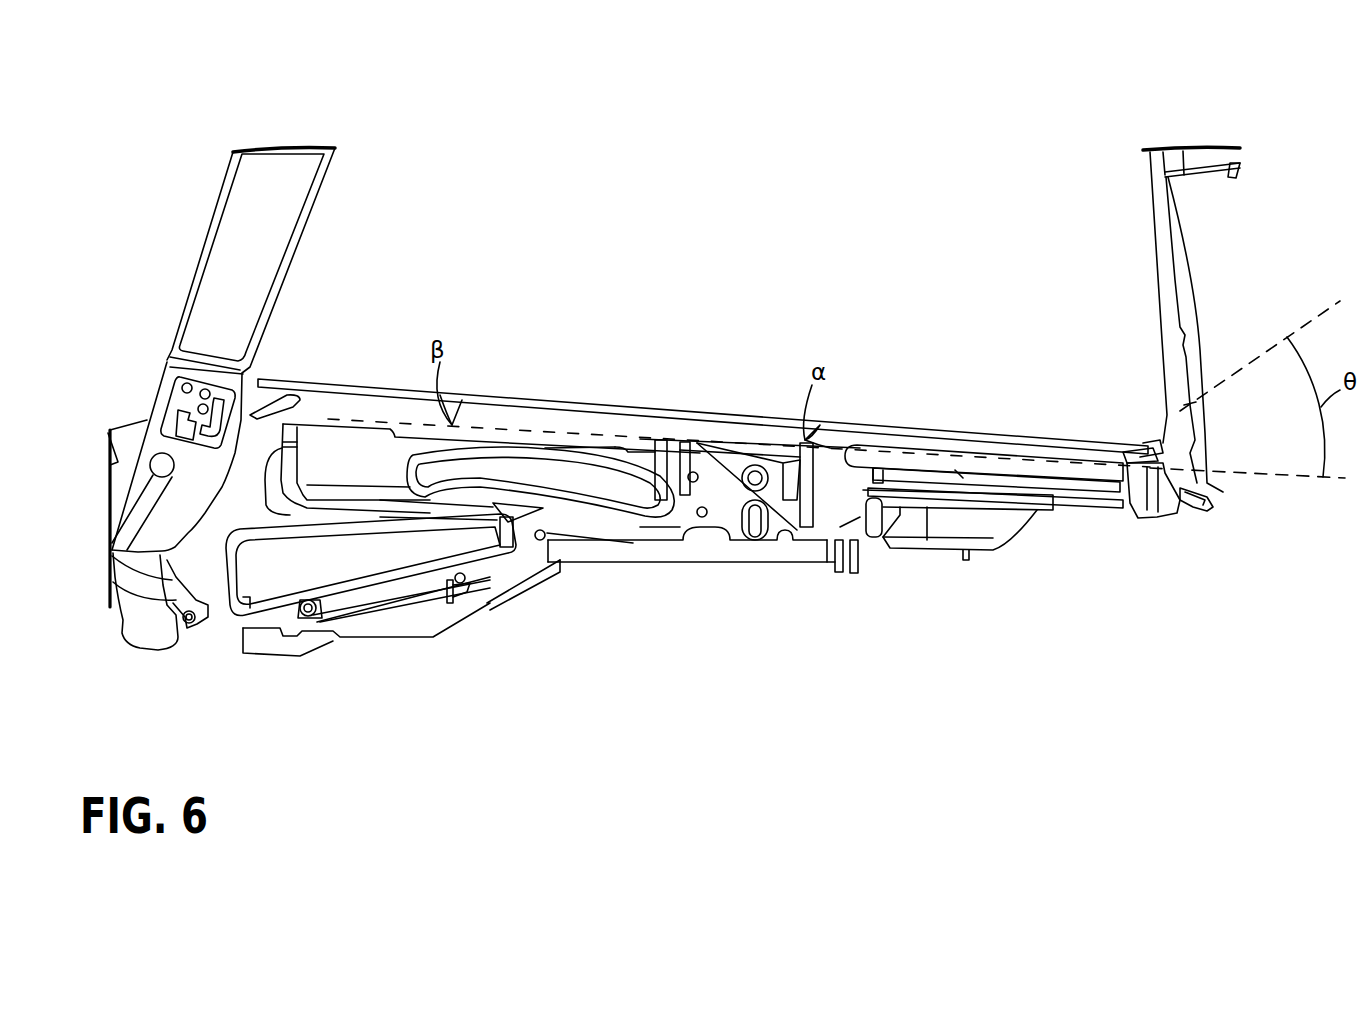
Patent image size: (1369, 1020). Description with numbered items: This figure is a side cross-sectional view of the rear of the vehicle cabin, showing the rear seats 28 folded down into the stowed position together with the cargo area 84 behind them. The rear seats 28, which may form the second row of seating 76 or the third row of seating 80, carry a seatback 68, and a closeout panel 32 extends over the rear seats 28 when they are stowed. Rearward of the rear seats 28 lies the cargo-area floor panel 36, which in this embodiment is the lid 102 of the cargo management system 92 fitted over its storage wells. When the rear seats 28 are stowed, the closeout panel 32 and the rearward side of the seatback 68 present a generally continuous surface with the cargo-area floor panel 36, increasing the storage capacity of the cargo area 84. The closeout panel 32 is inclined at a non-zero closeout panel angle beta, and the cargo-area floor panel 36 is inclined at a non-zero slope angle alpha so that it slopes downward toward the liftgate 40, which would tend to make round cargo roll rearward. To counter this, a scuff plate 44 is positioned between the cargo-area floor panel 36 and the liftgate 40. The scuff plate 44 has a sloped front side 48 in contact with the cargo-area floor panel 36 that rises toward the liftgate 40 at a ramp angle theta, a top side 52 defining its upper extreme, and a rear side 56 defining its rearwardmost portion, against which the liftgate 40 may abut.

The rear seats 28 is at (222, 225).
The seatback 68 is at (210, 310).
The second row of seating 76 is at (165, 517).
The closeout panel 32 is at (518, 395).
The cargo-area floor panel 36 is at (707, 423).
The lid 102 is at (600, 449).
The cargo area 84 is at (527, 200).
The third row of seating 80 is at (400, 560).
The sloped front side 48 is at (1125, 458).
The cargo management system 92 is at (917, 517).
The liftgate 40 is at (1173, 218).
The top side 52 is at (1137, 443).
The scuff plate 44 is at (1162, 446).
The rear side 56 is at (1180, 513).